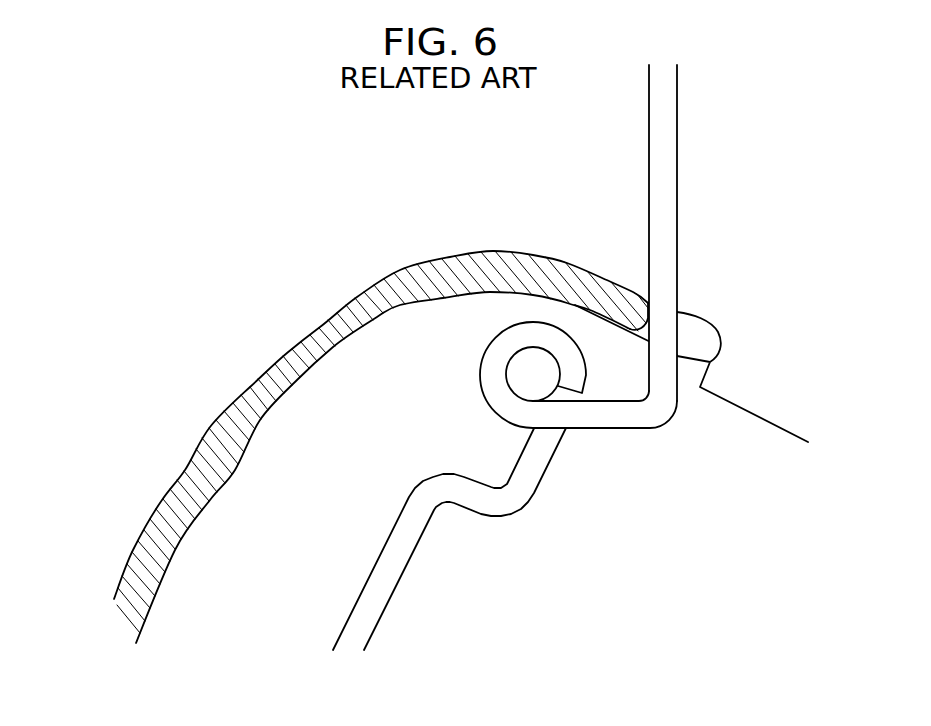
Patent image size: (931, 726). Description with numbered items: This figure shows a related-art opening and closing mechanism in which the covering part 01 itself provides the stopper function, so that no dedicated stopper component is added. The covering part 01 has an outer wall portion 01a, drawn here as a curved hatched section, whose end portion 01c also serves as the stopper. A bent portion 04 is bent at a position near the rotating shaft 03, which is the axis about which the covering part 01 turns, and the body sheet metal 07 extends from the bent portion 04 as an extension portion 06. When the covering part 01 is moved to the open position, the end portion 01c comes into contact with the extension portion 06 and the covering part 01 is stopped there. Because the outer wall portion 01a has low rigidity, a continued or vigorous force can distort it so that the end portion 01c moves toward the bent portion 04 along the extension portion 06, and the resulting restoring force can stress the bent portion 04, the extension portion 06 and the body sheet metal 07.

The covering part 01 is at (461, 447).
The outer wall portion 01a is at (278, 368).
The end portion 01c is at (650, 318).
The rotating shaft 03 is at (522, 370).
The bent portion 04 is at (615, 418).
The extension portion 06 is at (670, 233).
The body sheet metal 07 is at (713, 233).